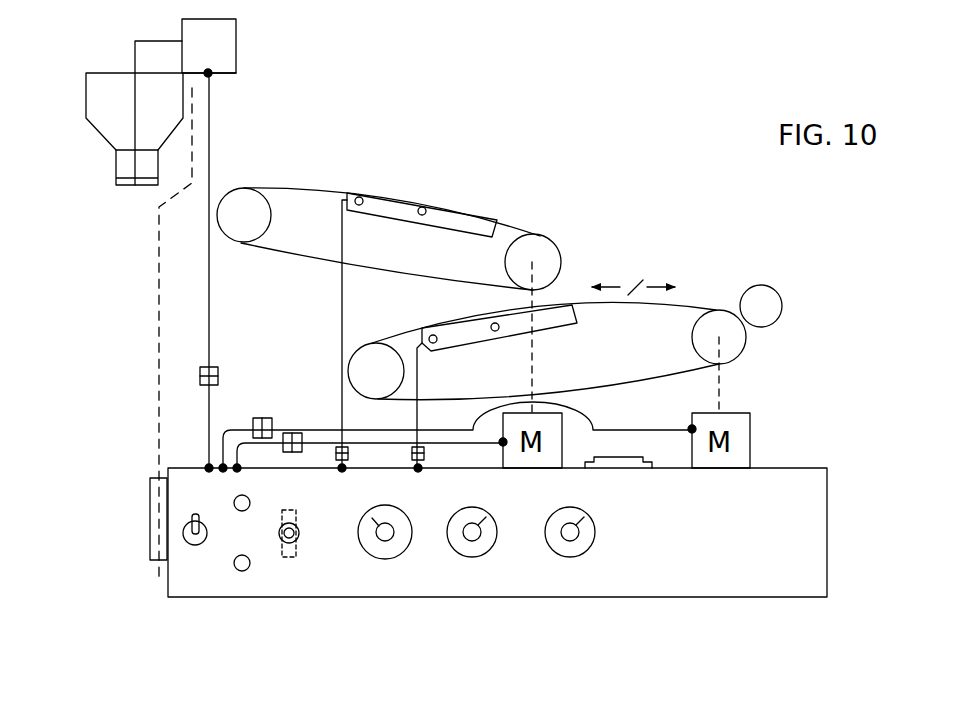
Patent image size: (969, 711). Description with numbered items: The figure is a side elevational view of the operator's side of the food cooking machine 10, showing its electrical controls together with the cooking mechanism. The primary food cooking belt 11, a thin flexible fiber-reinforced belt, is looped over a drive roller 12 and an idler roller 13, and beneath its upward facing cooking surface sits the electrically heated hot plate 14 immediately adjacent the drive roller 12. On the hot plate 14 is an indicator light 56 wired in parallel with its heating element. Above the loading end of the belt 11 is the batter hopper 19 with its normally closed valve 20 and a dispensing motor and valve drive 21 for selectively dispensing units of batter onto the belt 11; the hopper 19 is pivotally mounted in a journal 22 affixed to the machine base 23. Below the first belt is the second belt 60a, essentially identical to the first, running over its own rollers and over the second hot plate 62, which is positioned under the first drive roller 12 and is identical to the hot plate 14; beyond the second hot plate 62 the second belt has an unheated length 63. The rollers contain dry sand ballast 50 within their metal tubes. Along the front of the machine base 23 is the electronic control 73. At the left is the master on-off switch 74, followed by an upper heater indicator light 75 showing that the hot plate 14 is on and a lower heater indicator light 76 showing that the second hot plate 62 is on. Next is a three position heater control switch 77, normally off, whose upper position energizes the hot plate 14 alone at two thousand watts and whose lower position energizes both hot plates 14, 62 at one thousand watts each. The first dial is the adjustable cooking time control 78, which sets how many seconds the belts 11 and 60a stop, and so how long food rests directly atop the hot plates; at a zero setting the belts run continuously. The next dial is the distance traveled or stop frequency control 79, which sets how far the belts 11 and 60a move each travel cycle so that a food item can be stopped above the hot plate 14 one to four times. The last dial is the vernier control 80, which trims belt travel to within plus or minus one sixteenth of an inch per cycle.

The food cooking machine 10 is at (630, 156).
The primary food cooking belt 11 is at (400, 175).
The drive roller 12 is at (545, 252).
The idler roller 13 is at (242, 200).
The hot plate 14 is at (436, 230).
The batter hopper 19 is at (100, 78).
The normally closed valve 20 is at (130, 187).
The dispensing motor and valve drive 21 is at (230, 33).
The journal 22 is at (150, 500).
The machine base 23 is at (829, 523).
The dry sand ballast 50 is at (430, 338).
The indicator light 56 is at (360, 196).
The second belt 60a is at (570, 302).
The second hot plate 62 is at (555, 322).
The unheated length 63 is at (697, 303).
The electronic control 73 is at (127, 647).
The master on-off switch 74 is at (190, 544).
The upper heater indicator light 75 is at (237, 510).
The lower heater indicator light 76 is at (238, 572).
The three position heater control switch 77 is at (288, 557).
The adjustable cooking time control 78 is at (382, 567).
The distance traveled or stop frequency control 79 is at (478, 560).
The vernier control 80 is at (580, 560).